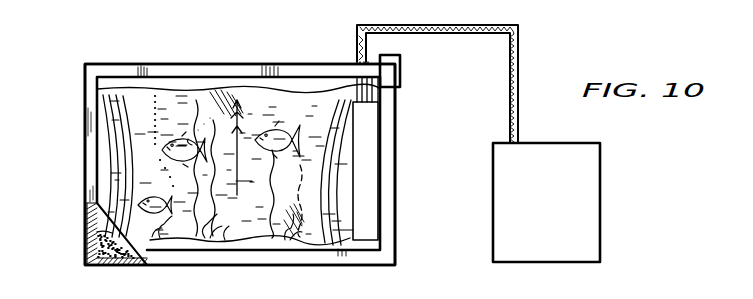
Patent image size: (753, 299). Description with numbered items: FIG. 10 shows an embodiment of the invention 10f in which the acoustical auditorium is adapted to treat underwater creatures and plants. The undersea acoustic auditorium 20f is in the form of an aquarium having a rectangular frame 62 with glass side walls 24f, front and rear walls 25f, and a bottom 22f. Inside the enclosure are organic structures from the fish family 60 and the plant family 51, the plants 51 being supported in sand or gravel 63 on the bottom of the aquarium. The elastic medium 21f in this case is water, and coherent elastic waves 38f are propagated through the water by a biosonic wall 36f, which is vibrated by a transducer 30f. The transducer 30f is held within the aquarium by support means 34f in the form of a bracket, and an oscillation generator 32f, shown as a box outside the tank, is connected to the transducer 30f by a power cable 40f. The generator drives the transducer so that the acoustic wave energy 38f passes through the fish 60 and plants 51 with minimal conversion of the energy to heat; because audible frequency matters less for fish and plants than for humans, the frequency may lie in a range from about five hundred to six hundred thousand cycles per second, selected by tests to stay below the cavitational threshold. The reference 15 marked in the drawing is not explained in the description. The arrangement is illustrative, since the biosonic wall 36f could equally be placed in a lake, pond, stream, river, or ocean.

The embodiment of the invention 10f is at (289, 58).
The undersea acoustic auditorium 20f is at (79, 106).
The elastic medium 21f is at (220, 90).
The bottom 22f is at (124, 268).
The glass side walls 24f is at (90, 225).
The front and rear walls 25f is at (171, 80).
The transducer 30f is at (372, 161).
The oscillation generator 32f is at (531, 262).
The support means 34f is at (518, 47).
The biosonic wall 36f is at (354, 193).
The coherent elastic waves 38f is at (112, 180).
The power cable 40f is at (400, 72).
The light rays 15 is at (132, 152).
The plants 51 is at (212, 202).
The fish 60 is at (240, 174).
The rectangular frame 62 is at (104, 46).
The sand or gravel 63 is at (88, 241).